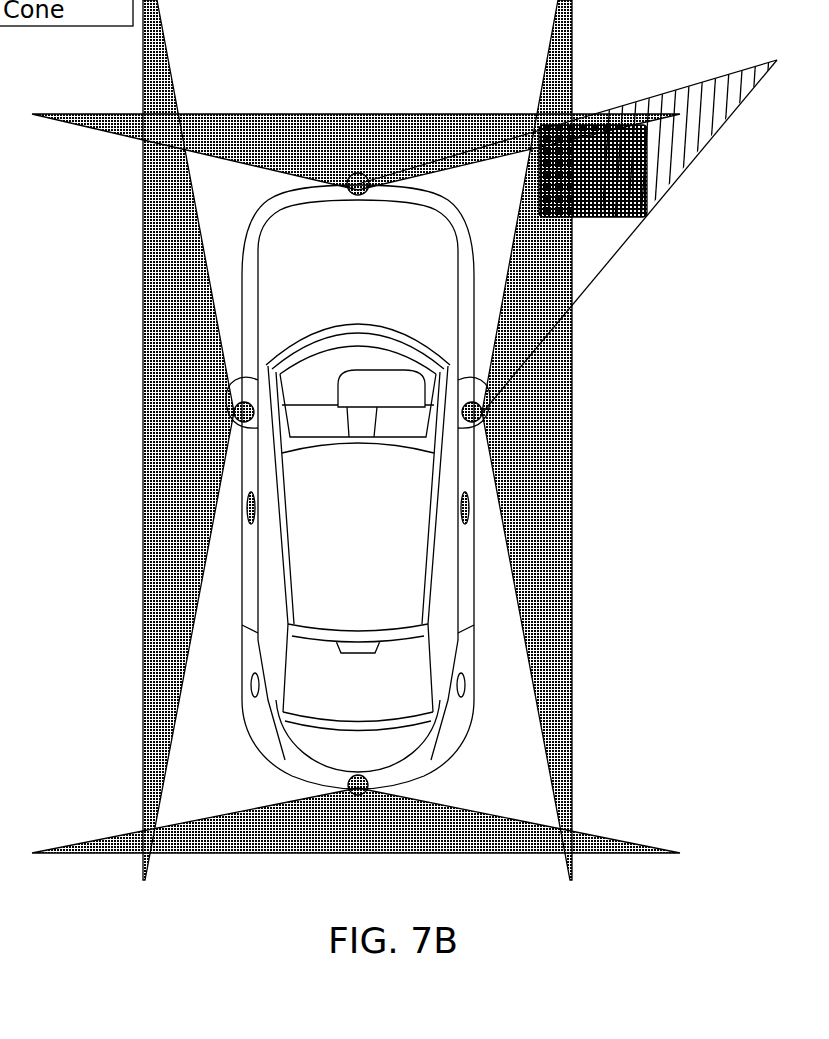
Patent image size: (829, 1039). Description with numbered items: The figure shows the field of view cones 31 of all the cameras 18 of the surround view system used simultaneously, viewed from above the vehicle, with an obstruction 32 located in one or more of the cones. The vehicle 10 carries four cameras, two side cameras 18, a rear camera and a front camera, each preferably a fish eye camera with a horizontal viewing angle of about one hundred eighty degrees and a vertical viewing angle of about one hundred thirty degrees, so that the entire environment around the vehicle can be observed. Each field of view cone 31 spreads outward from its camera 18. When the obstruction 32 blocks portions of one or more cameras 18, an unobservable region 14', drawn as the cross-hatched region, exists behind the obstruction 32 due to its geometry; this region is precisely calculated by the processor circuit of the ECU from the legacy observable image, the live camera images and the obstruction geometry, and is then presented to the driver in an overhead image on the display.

The vehicle 10 is at (430, 228).
The unobservable region 14' is at (570, 222).
The camera 18 is at (358, 447).
The field of view cone 31 is at (360, 114).
The obstruction 32 is at (600, 218).